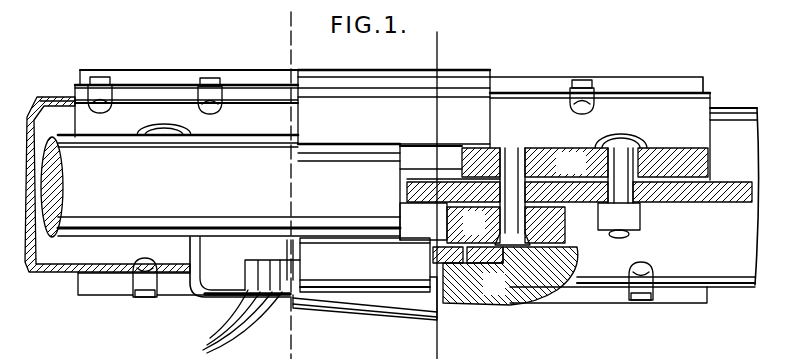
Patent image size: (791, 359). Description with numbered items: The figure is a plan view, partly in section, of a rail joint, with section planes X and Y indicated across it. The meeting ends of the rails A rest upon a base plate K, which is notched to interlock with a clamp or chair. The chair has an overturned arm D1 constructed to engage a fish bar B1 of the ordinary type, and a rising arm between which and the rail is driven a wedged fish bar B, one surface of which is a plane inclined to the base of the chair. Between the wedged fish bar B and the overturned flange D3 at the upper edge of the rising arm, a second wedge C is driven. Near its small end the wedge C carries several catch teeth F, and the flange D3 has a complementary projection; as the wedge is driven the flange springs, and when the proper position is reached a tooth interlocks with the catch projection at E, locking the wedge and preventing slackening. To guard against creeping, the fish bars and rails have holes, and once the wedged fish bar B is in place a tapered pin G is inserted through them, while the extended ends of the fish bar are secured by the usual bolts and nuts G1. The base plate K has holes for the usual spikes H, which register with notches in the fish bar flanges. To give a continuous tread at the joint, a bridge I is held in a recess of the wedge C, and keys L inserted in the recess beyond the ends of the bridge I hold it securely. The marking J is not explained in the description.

The meeting ends of the rails A is at (392, 192).
The wedged fish bar B is at (197, 280).
The fish bar B1 is at (392, 132).
The second wedge C is at (232, 268).
The overturned arm D1 is at (394, 109).
The overturned flange D3 is at (407, 297).
The interlock point E is at (295, 282).
The catch teeth F is at (236, 324).
The pin G is at (513, 180).
The bolts and nuts G1 is at (623, 147).
The spikes H is at (100, 90).
The bridge I is at (365, 265).
The base plate K is at (153, 80).
The keys L is at (270, 267).
The section plane X X is at (450, 192).
The section plane Y Y is at (276, 185).
The member J is at (459, 353).